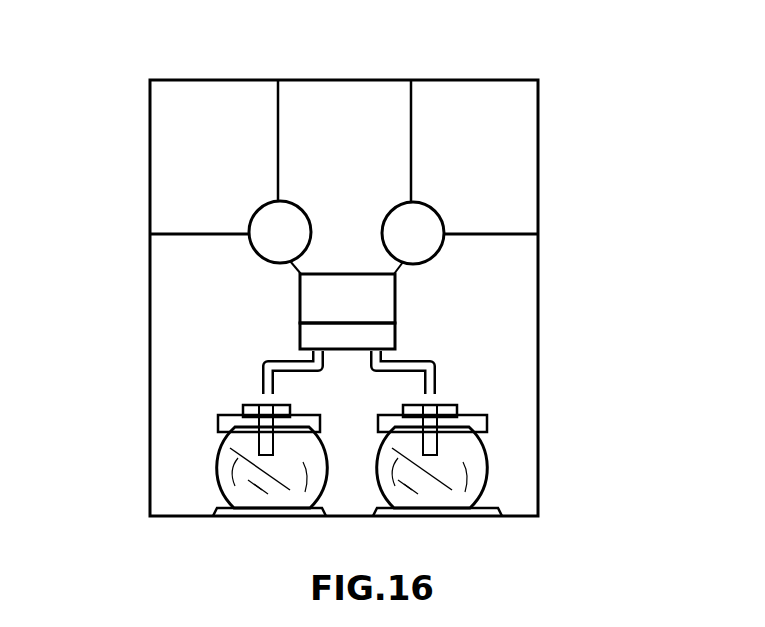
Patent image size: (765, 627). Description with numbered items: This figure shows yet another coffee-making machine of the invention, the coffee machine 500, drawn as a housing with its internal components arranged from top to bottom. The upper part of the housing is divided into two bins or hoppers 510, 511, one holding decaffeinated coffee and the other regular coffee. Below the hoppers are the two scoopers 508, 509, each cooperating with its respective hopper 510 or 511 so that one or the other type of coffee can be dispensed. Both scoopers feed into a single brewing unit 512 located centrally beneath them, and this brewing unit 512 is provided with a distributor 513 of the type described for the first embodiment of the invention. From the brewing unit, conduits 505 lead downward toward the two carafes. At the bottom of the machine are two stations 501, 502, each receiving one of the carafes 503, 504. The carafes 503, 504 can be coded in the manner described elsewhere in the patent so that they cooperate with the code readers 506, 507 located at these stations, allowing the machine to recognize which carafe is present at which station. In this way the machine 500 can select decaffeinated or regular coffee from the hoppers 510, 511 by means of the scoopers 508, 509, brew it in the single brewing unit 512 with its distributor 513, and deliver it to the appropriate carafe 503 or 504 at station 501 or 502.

The coffee machine 500 is at (548, 100).
The station 501 is at (216, 511).
The station 502 is at (490, 514).
The carafe 503 is at (219, 472).
The carafe 504 is at (487, 465).
The dispensing conduits 505 is at (349, 372).
The code reader 506 is at (218, 421).
The code reader 507 is at (487, 418).
The scooper 508 is at (270, 243).
The scooper 509 is at (428, 239).
The bin or hopper 510 is at (170, 161).
The bin or hopper 511 is at (515, 176).
The brewing unit 512 is at (314, 302).
The distributor 513 is at (385, 340).